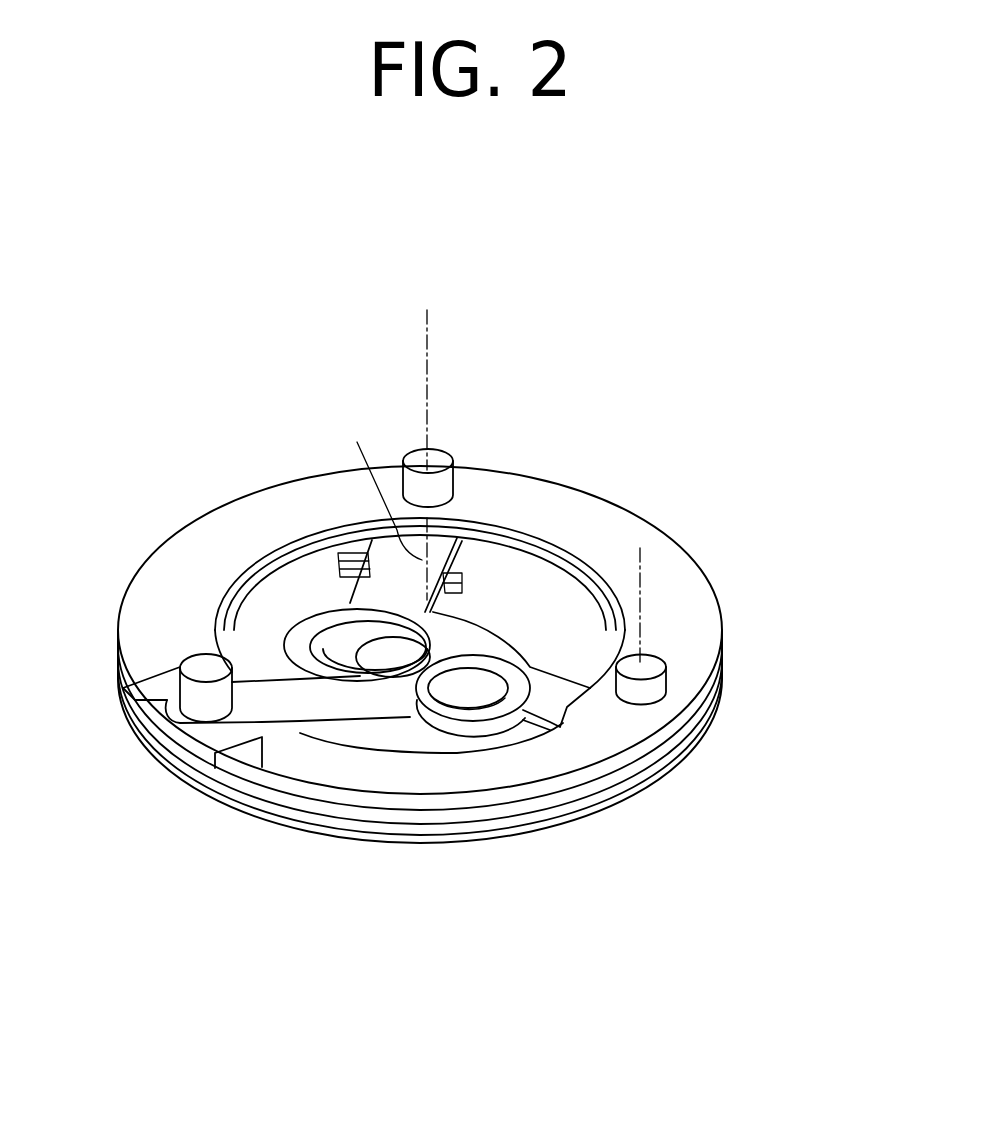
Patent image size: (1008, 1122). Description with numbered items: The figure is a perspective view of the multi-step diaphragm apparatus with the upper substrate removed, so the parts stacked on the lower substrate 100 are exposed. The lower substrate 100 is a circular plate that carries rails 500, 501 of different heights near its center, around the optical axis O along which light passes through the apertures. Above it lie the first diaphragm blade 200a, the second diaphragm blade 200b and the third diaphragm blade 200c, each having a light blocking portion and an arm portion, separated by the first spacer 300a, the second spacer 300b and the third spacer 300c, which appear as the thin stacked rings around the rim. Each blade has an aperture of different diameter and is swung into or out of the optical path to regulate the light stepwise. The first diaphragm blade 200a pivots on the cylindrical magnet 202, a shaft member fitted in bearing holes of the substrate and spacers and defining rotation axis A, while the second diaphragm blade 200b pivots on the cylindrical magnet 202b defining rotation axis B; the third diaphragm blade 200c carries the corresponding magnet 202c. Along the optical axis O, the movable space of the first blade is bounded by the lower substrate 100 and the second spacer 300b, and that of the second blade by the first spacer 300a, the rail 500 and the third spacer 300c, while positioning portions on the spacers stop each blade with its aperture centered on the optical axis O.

The lower substrate 100 is at (413, 847).
The first diaphragm blade 200a is at (510, 653).
The second diaphragm blade 200b is at (377, 598).
The third diaphragm blade 200c is at (293, 700).
The pin 202 is at (667, 678).
The cylindrical magnet 202b is at (437, 457).
The pin 202c is at (197, 705).
The first spacer 300a is at (557, 813).
The second spacer 300b is at (603, 777).
The third spacer 300c is at (615, 722).
The rail 500 is at (437, 555).
The rail 501 is at (307, 727).
The rotation axis A is at (640, 623).
The rotation axis B is at (427, 380).
The optical axis O is at (382, 481).